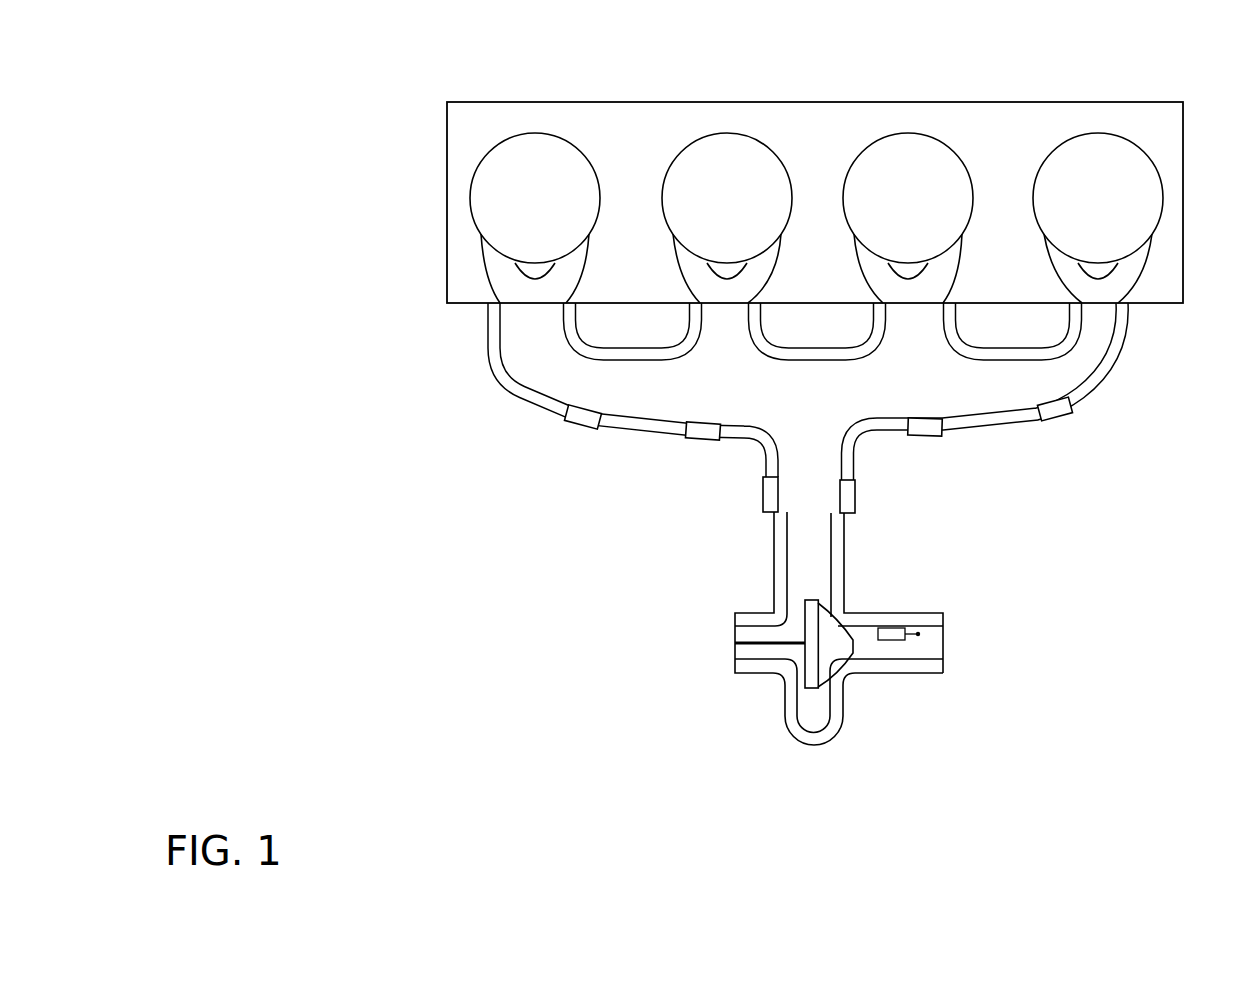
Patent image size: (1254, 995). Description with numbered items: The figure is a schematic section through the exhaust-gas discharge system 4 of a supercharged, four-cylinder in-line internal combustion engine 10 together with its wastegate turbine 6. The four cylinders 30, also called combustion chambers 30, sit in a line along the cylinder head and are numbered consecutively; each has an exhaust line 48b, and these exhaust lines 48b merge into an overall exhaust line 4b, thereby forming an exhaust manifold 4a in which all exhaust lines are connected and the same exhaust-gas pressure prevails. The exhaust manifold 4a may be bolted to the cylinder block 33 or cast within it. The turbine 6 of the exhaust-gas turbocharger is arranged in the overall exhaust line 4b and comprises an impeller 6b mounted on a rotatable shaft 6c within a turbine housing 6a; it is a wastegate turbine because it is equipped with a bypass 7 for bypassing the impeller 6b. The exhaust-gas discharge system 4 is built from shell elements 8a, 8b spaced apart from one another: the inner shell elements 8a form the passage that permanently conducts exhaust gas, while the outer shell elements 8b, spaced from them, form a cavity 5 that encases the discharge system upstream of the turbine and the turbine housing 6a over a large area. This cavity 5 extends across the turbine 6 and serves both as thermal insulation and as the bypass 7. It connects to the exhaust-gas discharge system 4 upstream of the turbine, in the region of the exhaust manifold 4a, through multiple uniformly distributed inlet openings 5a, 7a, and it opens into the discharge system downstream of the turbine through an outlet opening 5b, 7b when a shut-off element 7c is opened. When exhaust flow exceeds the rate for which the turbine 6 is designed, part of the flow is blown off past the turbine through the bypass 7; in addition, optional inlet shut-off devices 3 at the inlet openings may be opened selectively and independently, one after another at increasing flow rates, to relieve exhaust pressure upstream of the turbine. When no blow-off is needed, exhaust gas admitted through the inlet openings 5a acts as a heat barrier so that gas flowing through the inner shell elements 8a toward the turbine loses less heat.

The supercharged internal combustion engine 10 is at (373, 104).
The cylinders 30 is at (678, 158).
The cylinder block 33 is at (1184, 173).
The exhaust lines 48b is at (512, 277).
The inlet openings 5a is at (808, 402).
The inlet openings 7a is at (703, 400).
The inlet shut-off devices 3 is at (584, 419).
The exhaust-gas discharge system 4 is at (1009, 475).
The exhaust manifold 4a is at (973, 402).
The overall exhaust line 4b is at (820, 455).
The inner shell elements 8a is at (770, 463).
The outer shell elements 8b is at (770, 518).
The cavity 5 is at (736, 598).
The bypass 7 is at (777, 577).
The outlet opening 5b is at (901, 593).
The outlet opening 7b is at (901, 593).
The shut-off element 7c is at (890, 622).
The wastegate turbine 6 is at (786, 632).
The turbine housing 6a is at (823, 703).
The impeller 6b is at (815, 658).
The rotatable shaft 6c is at (760, 643).